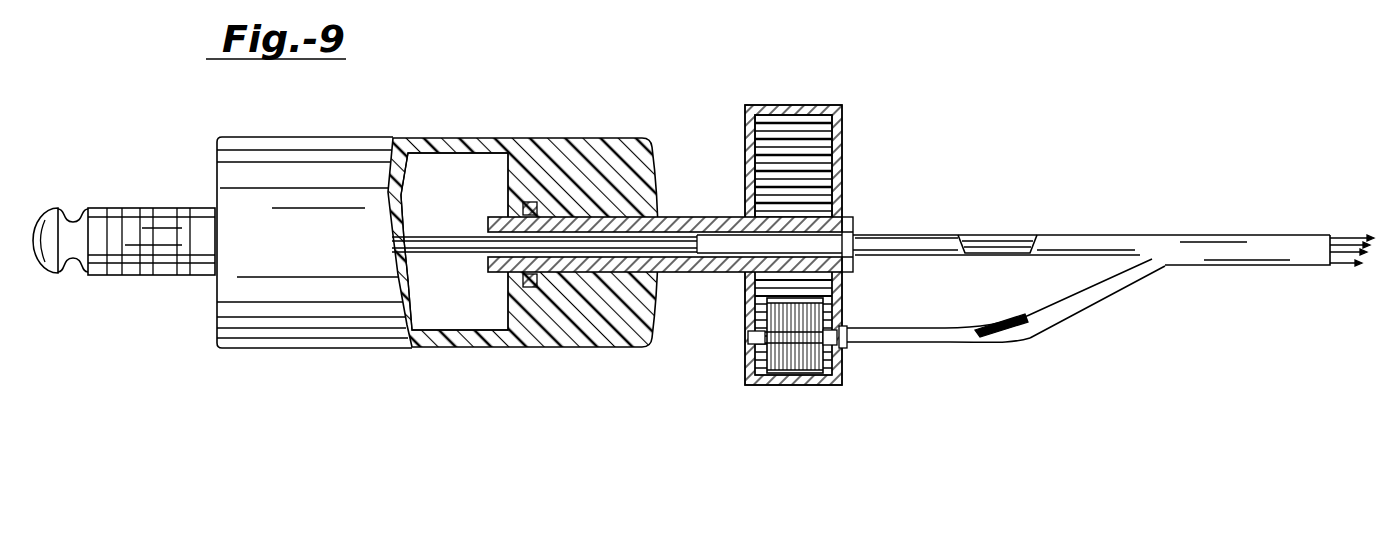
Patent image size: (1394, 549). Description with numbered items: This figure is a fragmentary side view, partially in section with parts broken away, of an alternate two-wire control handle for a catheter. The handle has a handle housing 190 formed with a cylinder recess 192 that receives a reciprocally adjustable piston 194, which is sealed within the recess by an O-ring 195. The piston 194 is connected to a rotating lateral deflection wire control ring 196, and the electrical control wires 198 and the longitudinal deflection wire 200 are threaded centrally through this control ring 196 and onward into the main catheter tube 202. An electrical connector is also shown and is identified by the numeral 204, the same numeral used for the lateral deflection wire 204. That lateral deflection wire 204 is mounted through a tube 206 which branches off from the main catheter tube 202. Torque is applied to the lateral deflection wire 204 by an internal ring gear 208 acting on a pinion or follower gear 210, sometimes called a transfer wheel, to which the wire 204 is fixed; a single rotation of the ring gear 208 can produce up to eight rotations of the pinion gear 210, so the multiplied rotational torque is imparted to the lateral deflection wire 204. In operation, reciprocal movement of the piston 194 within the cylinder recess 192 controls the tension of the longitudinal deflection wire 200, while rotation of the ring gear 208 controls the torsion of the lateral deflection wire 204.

The handle housing 190 is at (558, 132).
The cylinder recess 192 is at (573, 277).
The piston 194 is at (675, 217).
The O-ring 195 is at (524, 283).
The lateral deflection wire control ring 196 is at (843, 184).
The electrical control wires 198 is at (435, 234).
The longitudinal deflection wire 200 is at (423, 254).
The main catheter tube 202 is at (910, 232).
The lateral deflection wire 204 is at (48, 207).
The tube 206 is at (908, 344).
The internal ring gear 208 is at (790, 120).
The pinion gear 210 is at (818, 303).